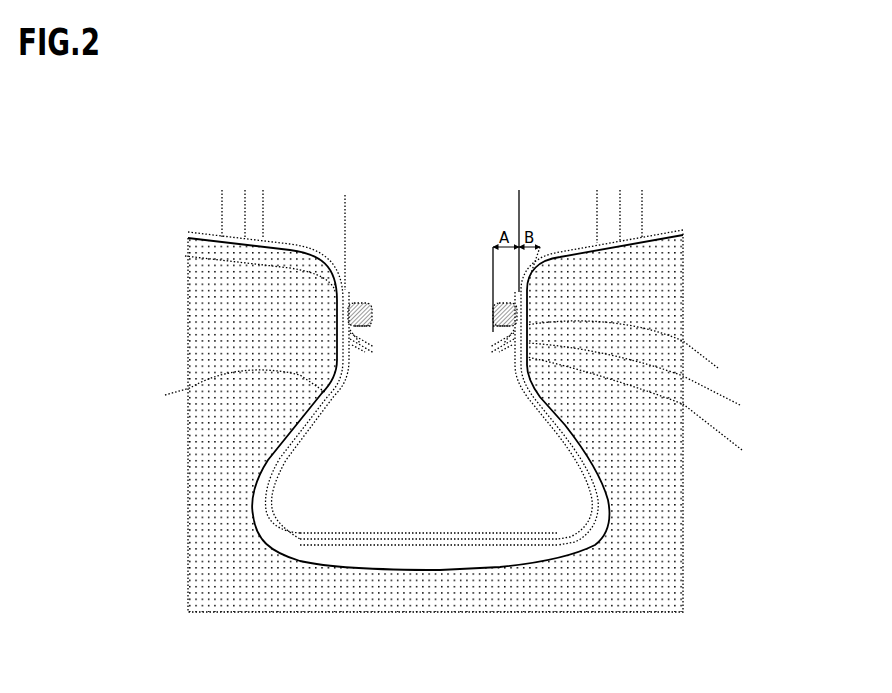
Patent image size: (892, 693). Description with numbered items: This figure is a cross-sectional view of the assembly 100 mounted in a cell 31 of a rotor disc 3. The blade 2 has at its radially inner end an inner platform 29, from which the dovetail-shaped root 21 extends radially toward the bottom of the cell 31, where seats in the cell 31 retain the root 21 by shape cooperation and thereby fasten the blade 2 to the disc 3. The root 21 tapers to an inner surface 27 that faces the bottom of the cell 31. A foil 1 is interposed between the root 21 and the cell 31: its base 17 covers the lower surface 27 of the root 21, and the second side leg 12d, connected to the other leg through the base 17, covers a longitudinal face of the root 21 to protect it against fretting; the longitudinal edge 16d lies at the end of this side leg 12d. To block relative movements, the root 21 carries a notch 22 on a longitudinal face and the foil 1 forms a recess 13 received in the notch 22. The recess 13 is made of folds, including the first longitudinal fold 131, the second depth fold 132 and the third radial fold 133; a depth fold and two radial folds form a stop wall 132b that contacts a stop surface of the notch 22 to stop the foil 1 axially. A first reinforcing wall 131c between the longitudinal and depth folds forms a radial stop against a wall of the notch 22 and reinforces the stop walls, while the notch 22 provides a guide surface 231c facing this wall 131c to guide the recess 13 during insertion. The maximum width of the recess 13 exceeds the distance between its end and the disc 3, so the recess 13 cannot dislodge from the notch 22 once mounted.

The foil 1 is at (593, 507).
The blade 2 is at (344, 218).
The rotor disc 3 is at (675, 488).
The assembly 100 is at (326, 390).
The second side leg 12d is at (221, 387).
The longitudinal edge 16d is at (242, 266).
The recess 13 is at (493, 323).
The base 17 is at (468, 542).
The root 21 is at (350, 455).
The notch 22 is at (493, 318).
The inner surface 27 is at (432, 530).
The inner platform 29 is at (607, 213).
The cell 31 is at (410, 553).
The first longitudinal fold 131 is at (652, 411).
The second depth fold 132 is at (650, 382).
The third fold 133 is at (640, 351).
The first reinforcing wall 131c is at (500, 342).
The stop wall 132b is at (507, 328).
The guide surface 231c is at (497, 343).